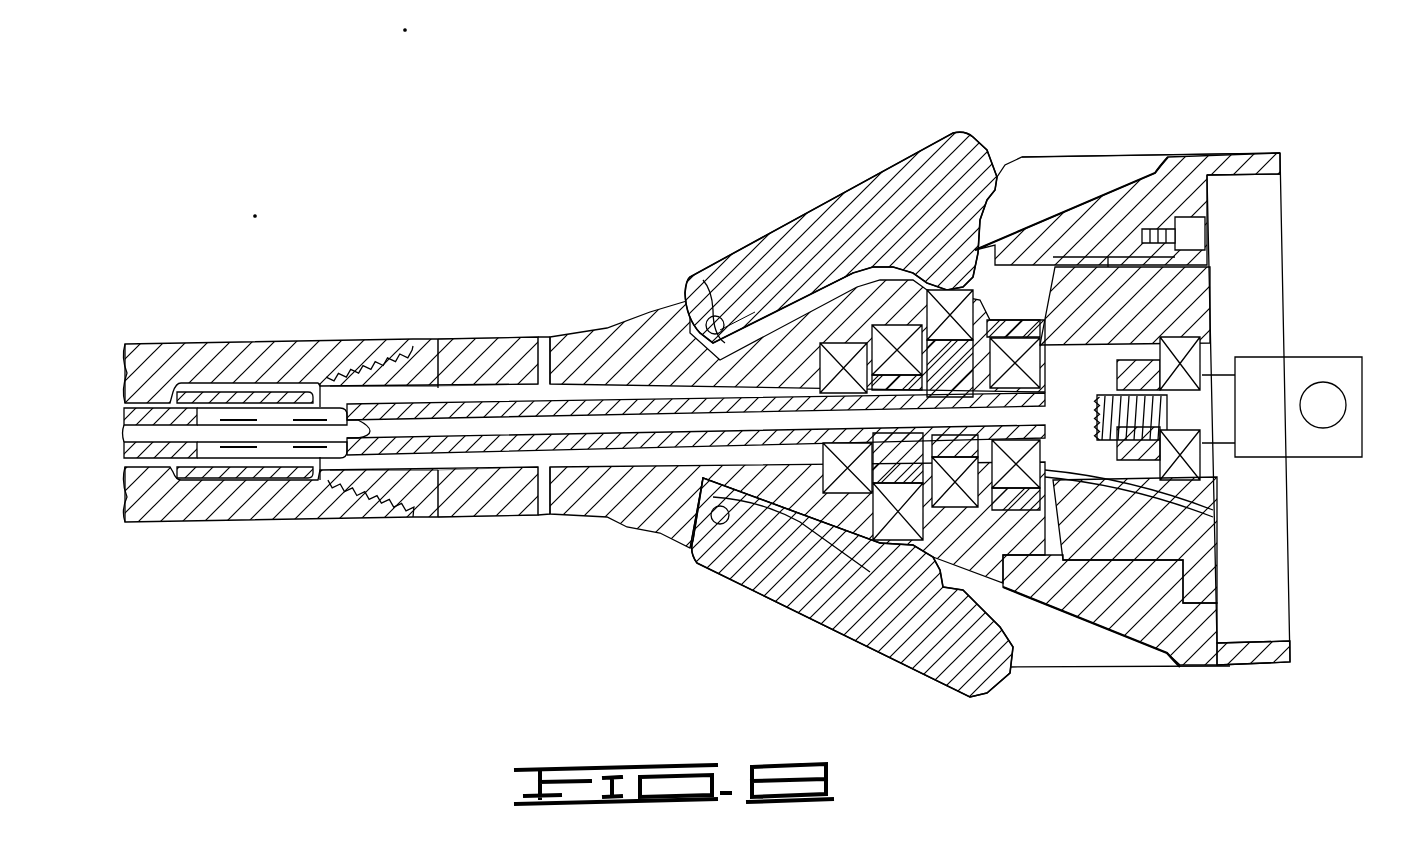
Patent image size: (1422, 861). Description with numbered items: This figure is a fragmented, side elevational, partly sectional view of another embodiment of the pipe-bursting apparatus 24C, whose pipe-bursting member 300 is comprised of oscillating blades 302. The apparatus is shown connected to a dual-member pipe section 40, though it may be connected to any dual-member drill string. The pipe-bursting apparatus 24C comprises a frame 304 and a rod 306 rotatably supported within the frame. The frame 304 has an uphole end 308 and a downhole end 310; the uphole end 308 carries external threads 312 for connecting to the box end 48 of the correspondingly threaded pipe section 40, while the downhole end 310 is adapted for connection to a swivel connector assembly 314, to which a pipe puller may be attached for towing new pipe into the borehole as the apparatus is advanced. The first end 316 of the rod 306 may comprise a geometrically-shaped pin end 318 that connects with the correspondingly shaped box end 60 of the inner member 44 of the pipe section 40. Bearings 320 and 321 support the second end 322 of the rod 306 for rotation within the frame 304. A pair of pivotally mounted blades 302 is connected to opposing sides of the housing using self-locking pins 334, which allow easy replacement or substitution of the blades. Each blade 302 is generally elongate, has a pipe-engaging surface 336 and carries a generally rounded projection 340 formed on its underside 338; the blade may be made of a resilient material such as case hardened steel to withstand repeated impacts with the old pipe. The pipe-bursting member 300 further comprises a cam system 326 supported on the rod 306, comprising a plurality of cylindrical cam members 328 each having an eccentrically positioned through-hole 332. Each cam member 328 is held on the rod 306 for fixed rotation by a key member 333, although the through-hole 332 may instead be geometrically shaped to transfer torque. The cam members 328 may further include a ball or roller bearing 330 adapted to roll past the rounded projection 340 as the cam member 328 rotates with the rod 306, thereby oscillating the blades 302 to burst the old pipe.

The pipe-bursting apparatus 24C is at (636, 130).
The pipe section 40 is at (145, 347).
The inner member 44 is at (160, 470).
The box end 48 is at (322, 500).
The box end 60 is at (258, 388).
The pipe-bursting member 300 is at (690, 555).
The oscillating blades 302 is at (852, 190).
The frame 304 is at (607, 327).
The rod 306 is at (590, 456).
The uphole end 308 is at (446, 500).
The downhole end 310 is at (1217, 667).
The external threads 312 is at (376, 505).
The swivel connector assembly 314 is at (1325, 352).
The first end 316 is at (445, 380).
The pin end 318 is at (335, 370).
The bearing 320 is at (785, 563).
The bearing 321 is at (1042, 462).
The second end 322 is at (1095, 345).
The cam system 326 is at (983, 299).
The cylindrical cam members 328 is at (940, 292).
The ball or roller bearing 330 is at (930, 590).
The through-hole 332 is at (870, 470).
The key member 333 is at (1055, 470).
The self-locking pins 334 is at (703, 300).
The pipe-engaging surface 336 is at (762, 265).
The underside 338 is at (845, 272).
The rounded projection 340 is at (1035, 245).